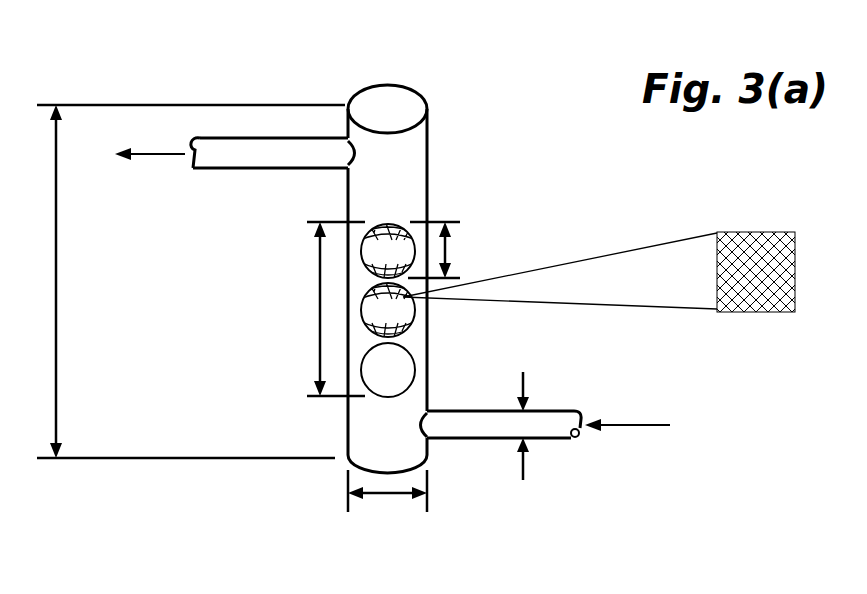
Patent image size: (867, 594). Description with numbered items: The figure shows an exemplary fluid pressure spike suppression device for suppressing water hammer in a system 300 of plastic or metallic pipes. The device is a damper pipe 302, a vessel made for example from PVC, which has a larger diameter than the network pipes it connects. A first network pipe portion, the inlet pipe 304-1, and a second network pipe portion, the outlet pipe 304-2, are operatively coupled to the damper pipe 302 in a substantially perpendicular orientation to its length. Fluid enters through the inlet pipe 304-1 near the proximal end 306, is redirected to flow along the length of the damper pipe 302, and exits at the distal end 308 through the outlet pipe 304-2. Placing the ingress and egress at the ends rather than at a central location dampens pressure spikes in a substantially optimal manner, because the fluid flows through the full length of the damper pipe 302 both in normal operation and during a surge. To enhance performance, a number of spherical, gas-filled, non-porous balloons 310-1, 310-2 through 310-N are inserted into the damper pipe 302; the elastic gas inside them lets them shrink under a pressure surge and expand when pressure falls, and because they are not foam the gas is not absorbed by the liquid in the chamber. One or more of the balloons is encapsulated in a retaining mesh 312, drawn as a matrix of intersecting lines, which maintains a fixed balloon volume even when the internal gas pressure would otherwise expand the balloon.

The system 300 is at (406, 304).
The damper pipe 302 is at (430, 152).
The inlet pipe 304-1 is at (550, 410).
The outlet pipe 304-2 is at (232, 154).
The proximal end 306 is at (398, 456).
The distal end 308 is at (387, 143).
The balloon 310-1 is at (388, 250).
The balloon 310-2 is at (388, 309).
The balloon 310-N is at (388, 370).
The retaining mesh 312 is at (599, 272).